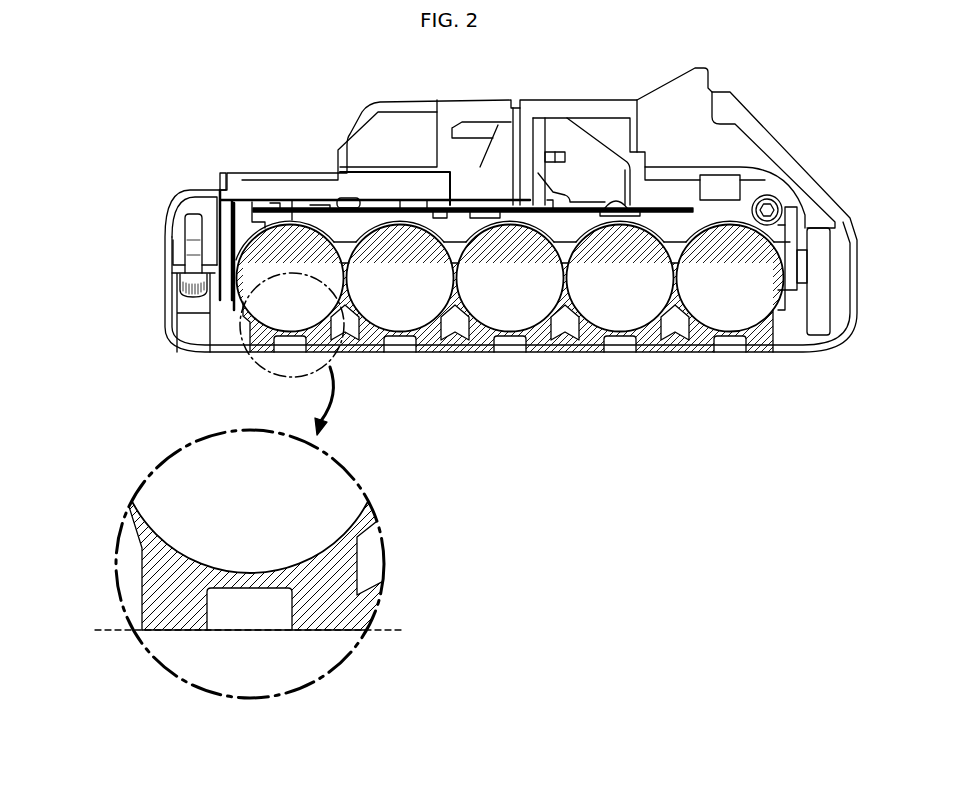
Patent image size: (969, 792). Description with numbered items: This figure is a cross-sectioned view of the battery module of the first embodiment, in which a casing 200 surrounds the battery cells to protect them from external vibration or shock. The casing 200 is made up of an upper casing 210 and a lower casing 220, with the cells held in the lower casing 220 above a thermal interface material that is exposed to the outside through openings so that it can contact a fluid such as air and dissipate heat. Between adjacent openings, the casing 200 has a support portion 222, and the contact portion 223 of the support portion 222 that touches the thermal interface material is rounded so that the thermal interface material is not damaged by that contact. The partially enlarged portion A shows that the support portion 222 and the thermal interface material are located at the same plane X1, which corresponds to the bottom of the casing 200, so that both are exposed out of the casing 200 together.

The casing 200 is at (93, 226).
The upper casing 210 is at (173, 223).
The lower casing 220 is at (170, 288).
The support portion 222 is at (237, 618).
The contact portion 223 is at (205, 582).
The portion A is at (292, 325).
The plane X1 is at (267, 632).